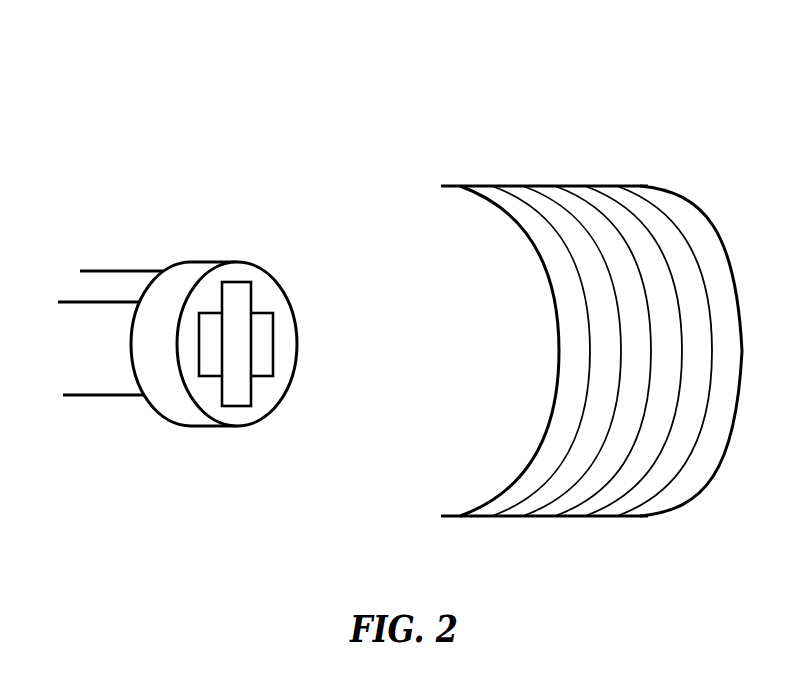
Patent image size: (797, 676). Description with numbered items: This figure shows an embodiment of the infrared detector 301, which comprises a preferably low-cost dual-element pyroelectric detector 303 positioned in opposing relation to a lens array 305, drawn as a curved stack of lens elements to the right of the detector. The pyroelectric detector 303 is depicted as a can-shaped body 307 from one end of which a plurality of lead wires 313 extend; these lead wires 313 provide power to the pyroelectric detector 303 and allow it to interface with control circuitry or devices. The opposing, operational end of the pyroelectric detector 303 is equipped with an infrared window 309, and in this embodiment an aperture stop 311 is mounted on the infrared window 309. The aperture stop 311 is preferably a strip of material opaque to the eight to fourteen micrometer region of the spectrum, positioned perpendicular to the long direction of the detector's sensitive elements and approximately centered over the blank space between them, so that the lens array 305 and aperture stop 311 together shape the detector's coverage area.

The infrared detector 301 is at (204, 50).
The dual-element pyroelectric detector 303 is at (167, 194).
The lens array 305 is at (559, 350).
The cylindrical housing 307 is at (131, 349).
The infrared window 309 is at (273, 340).
The aperture stop 311 is at (252, 300).
The lead wires 313 is at (123, 270).